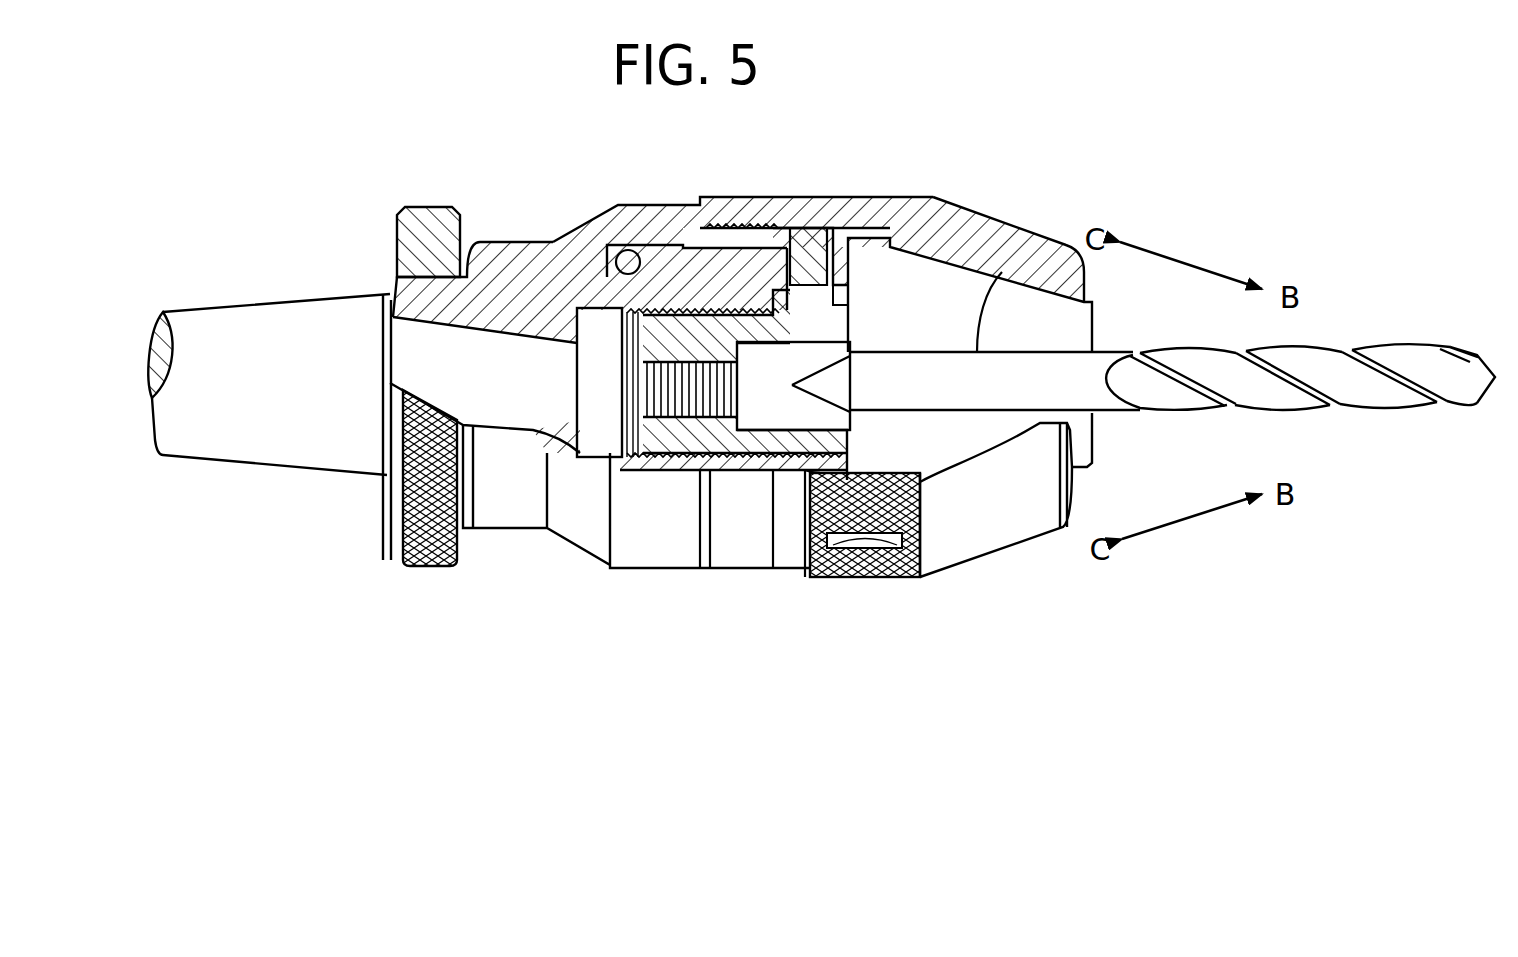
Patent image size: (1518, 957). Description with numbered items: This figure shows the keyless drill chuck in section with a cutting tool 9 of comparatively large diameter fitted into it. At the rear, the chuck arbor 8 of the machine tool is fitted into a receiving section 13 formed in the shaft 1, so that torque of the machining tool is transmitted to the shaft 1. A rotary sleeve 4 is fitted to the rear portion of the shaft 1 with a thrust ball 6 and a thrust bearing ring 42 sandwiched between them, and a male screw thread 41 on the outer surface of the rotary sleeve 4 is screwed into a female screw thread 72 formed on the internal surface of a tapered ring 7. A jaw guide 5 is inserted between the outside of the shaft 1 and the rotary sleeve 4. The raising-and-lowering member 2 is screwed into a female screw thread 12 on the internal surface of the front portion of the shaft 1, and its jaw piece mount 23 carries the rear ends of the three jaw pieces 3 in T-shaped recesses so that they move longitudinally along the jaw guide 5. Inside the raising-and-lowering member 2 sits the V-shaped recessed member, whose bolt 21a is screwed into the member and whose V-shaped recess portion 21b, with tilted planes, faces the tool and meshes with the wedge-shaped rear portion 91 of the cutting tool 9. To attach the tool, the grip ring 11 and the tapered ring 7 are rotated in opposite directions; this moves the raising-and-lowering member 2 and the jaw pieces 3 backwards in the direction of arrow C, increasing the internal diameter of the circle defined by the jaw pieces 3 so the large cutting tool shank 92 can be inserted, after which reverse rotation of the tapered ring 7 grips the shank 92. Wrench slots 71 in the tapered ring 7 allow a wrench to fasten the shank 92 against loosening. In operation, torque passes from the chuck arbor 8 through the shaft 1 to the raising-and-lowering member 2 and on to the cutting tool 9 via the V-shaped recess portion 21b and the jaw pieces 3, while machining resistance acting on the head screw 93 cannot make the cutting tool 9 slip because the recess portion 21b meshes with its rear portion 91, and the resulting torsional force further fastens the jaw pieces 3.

The shaft 1 is at (518, 295).
The raising-and-lowering member 2 is at (687, 448).
The bolt 21a is at (647, 397).
The V-shaped recess portion 21b is at (757, 418).
The jaw piece mount 23 is at (842, 293).
The jaw pieces 3 is at (1085, 322).
The rotary sleeve 4 is at (743, 211).
The male screw thread 41 is at (727, 228).
The thrust bearing ring 42 is at (590, 217).
The jaw guide 5 is at (826, 212).
The thrust ball 6 is at (630, 250).
The tapered ring 7 is at (901, 386).
The wrench slots 71 is at (863, 548).
The female screw thread 72 is at (762, 226).
The chuck arbor 8 is at (275, 320).
The cutting tool 9 is at (1116, 384).
The rear portion 91 is at (822, 388).
The cutting tool shank 92 is at (980, 345).
The head screw 93 is at (1416, 347).
The grip ring 11 is at (428, 215).
The female screw thread 12 is at (790, 450).
The receiving section 13 is at (540, 418).